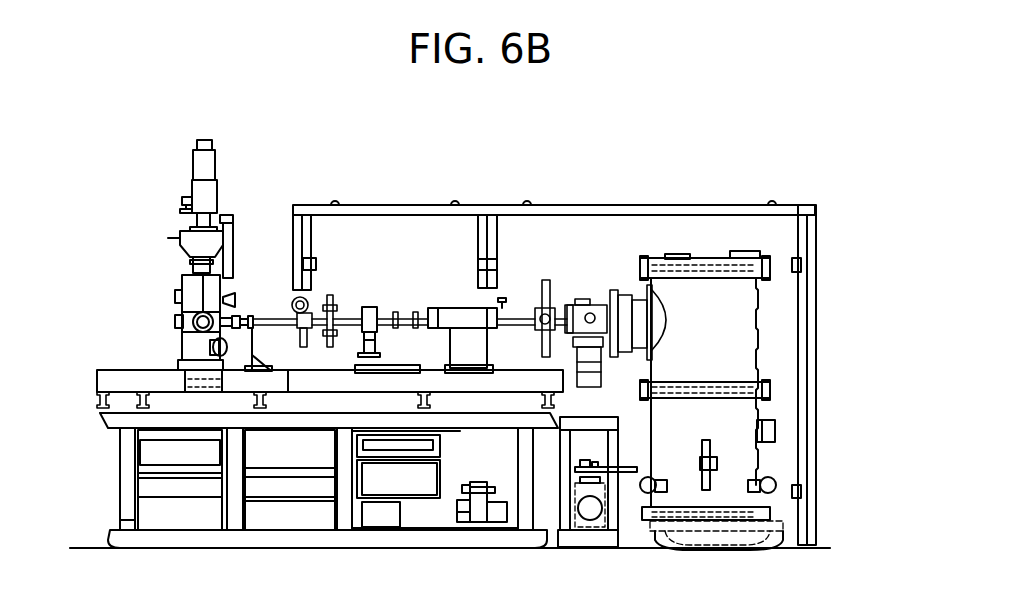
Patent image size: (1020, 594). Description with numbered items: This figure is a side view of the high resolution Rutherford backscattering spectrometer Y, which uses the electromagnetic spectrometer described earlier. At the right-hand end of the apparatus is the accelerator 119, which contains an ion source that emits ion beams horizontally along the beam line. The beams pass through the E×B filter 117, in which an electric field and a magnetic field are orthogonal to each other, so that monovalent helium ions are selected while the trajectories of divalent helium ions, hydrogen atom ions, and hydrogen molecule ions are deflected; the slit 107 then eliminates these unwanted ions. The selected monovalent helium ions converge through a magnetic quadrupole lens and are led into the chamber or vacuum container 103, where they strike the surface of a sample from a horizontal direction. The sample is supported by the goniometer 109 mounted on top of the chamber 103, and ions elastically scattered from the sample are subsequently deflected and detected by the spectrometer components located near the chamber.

The chamber 103 is at (180, 313).
The slit 107 is at (354, 307).
The goniometer 109 is at (210, 163).
The E×B filter 117 is at (457, 308).
The accelerator 119 is at (658, 258).
The high resolution Rutherford backscattering spectrometer Y is at (559, 168).